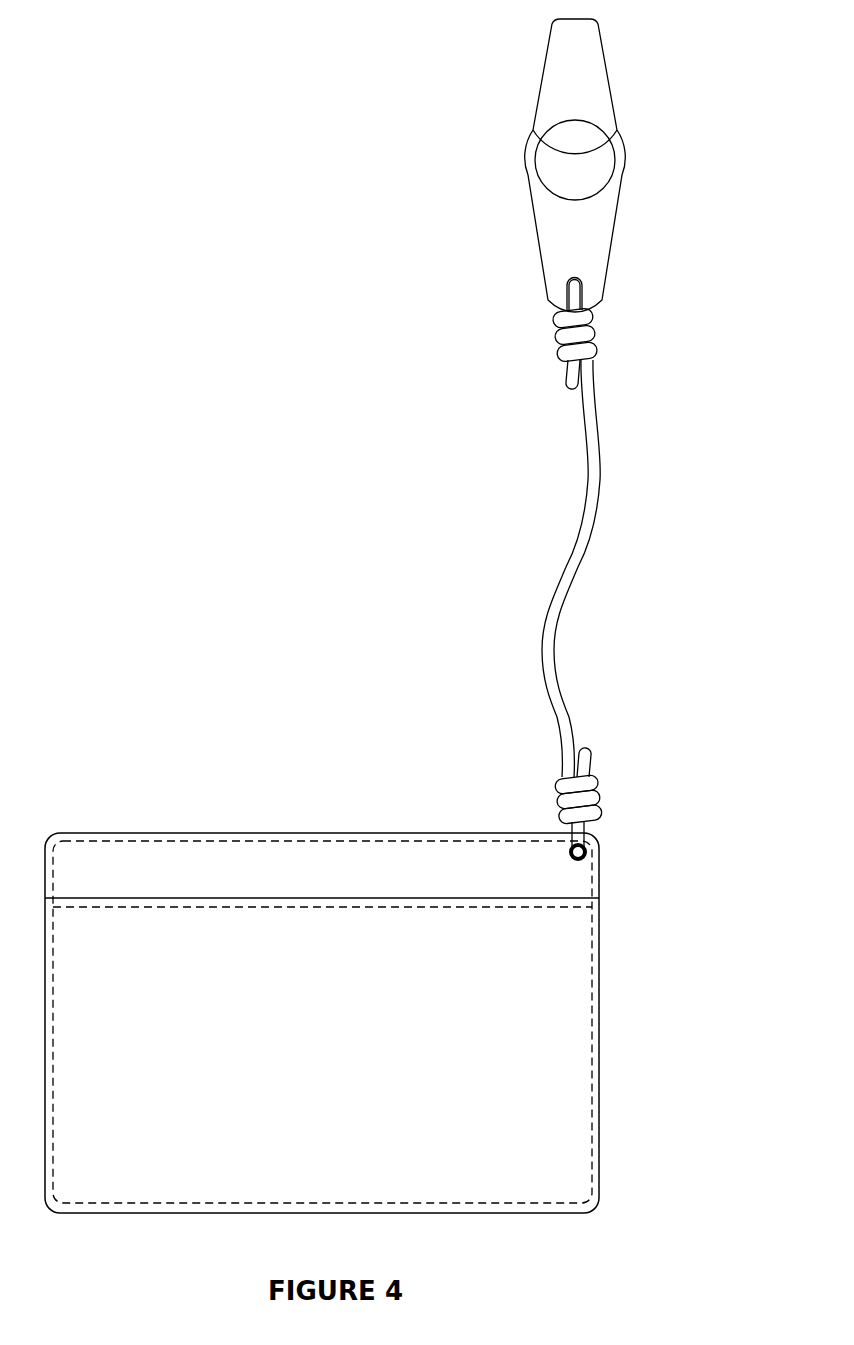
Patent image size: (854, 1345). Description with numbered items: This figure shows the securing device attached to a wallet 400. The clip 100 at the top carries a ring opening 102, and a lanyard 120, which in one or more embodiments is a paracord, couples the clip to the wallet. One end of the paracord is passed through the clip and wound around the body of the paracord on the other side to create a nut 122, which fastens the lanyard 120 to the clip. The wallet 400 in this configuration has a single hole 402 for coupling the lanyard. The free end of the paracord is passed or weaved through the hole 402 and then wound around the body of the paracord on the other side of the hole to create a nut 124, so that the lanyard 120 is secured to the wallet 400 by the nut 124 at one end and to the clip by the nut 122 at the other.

The clip body 100 is at (590, 97).
The ring opening 102 is at (602, 162).
The nut 122 is at (593, 330).
The lanyard 120 is at (592, 492).
The nut 124 is at (592, 783).
The hole 402 is at (592, 848).
The wallet 400 is at (565, 1050).